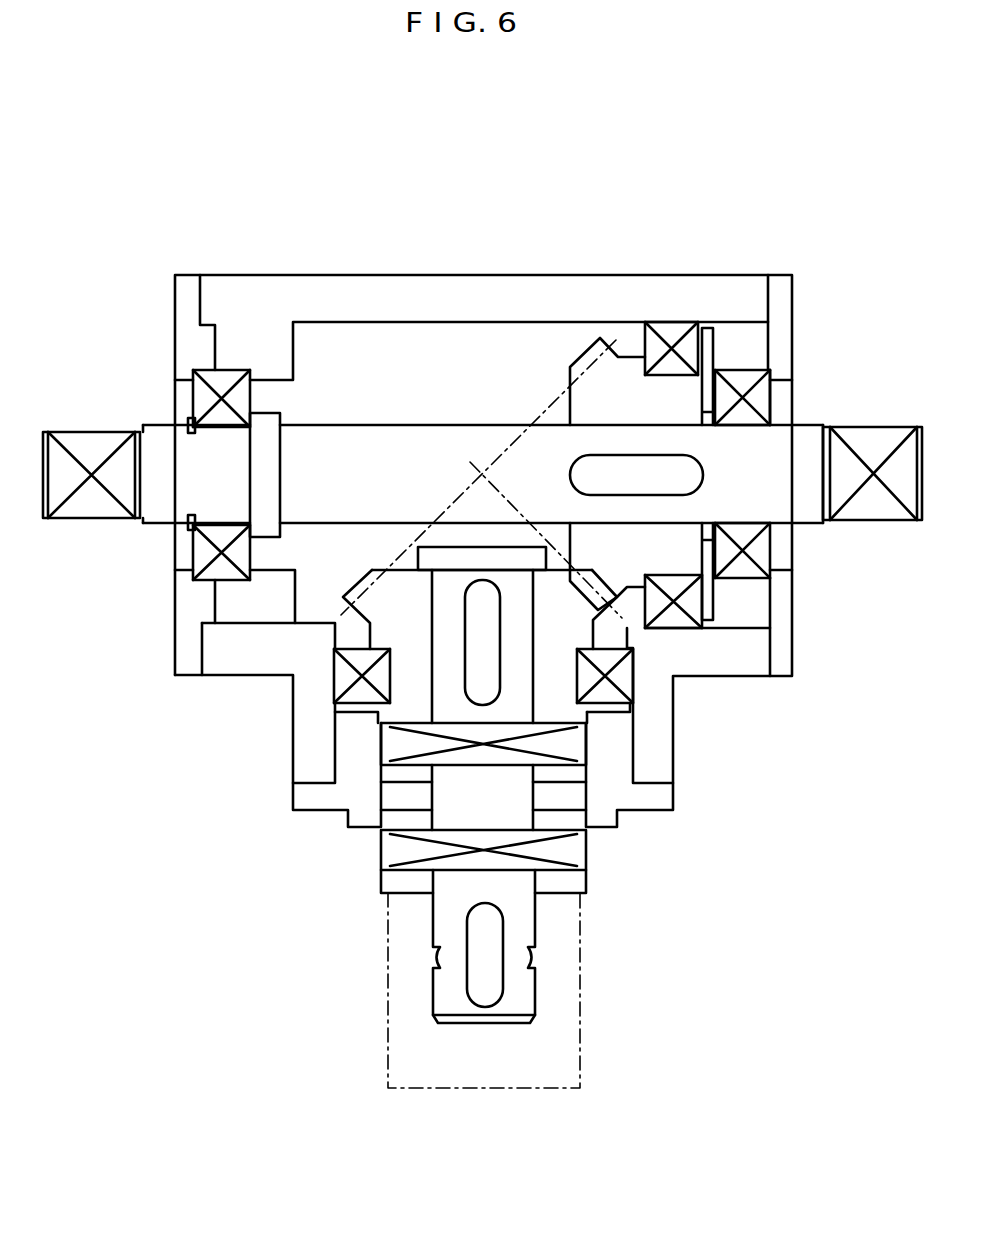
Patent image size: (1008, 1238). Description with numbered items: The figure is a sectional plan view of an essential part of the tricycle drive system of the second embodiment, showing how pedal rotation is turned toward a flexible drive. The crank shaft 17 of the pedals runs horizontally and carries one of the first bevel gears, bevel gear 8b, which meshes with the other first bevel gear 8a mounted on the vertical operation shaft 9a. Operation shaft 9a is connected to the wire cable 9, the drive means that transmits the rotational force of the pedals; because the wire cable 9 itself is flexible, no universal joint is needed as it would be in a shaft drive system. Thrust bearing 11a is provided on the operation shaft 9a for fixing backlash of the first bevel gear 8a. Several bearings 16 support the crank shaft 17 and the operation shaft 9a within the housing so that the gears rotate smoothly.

The first bevel gear 8a is at (385, 602).
The first bevel gear 8b is at (617, 378).
The wire cable 9 is at (580, 1010).
The operation shaft 9a is at (513, 908).
The thrust bearing 11a is at (392, 745).
The bearing 16 is at (688, 350).
The crank shaft 17 is at (805, 425).